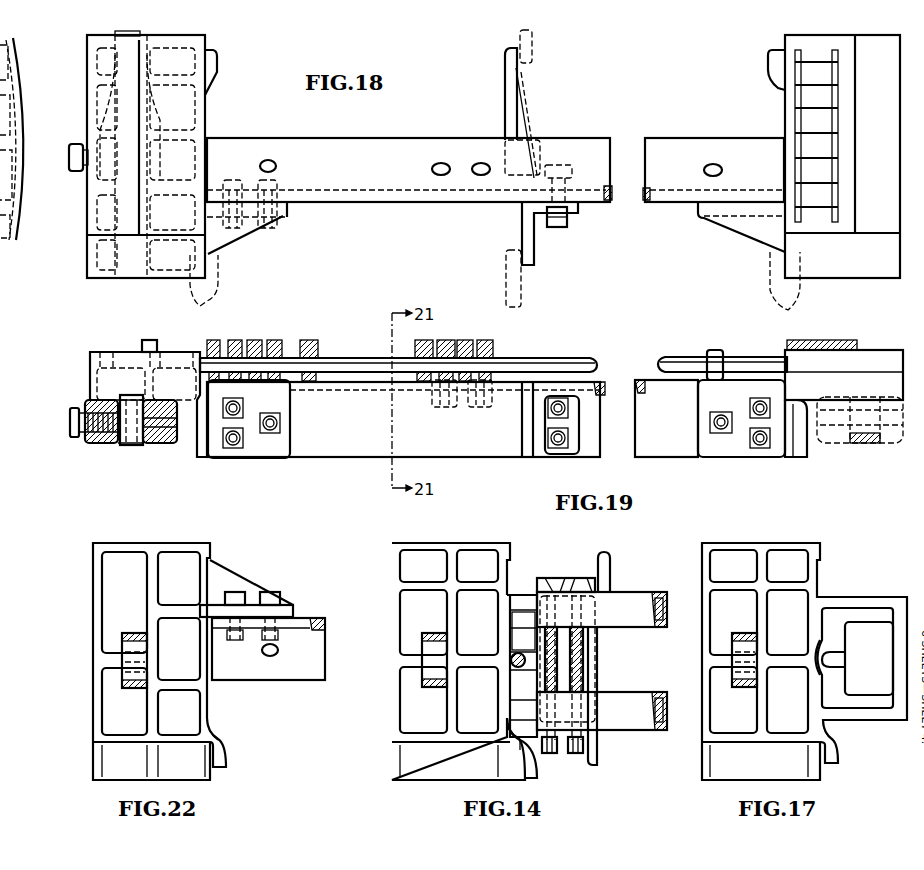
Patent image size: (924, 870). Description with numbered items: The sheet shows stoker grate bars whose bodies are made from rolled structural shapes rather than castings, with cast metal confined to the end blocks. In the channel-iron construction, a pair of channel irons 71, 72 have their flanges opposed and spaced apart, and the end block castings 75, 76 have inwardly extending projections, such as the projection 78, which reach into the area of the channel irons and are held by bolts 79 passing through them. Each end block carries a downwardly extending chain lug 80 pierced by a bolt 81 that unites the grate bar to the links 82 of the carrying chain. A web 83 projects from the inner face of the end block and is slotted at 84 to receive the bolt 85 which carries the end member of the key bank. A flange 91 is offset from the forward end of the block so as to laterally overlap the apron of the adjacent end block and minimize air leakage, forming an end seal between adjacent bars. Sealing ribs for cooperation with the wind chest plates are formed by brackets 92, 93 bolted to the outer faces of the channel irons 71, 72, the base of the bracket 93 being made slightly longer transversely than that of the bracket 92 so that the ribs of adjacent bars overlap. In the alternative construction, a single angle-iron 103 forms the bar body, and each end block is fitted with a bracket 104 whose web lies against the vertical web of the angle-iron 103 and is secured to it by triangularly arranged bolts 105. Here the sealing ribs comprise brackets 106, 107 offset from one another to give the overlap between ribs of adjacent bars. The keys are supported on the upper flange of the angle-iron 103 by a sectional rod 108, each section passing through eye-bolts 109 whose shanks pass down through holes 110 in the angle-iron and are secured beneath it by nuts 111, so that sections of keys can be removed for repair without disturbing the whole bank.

In FIG. 18, the end block casting 75 is at (2, 107).
In FIG. 19, the end block casting 75 is at (149, 398).
In FIG. 22, the end block casting 75 is at (108, 620).
In FIG. 18, the end block casting 76 is at (850, 152).
In FIG. 14, the inwardly extending projection 78 is at (520, 600).
In FIG. 17, the inwardly extending projection 78 is at (870, 598).
In FIG. 14, the bolts 79 is at (573, 660).
In FIG. 19, the chain lug 80 is at (132, 445).
In FIG. 22, the chain lug 80 is at (134, 660).
In FIG. 17, the chain lug 80 is at (744, 660).
In FIG. 18, the bolt 81 is at (72, 163).
In FIG. 19, the bolt 81 is at (72, 436).
In FIG. 19, the links of the carrying chain 82 is at (103, 443).
In FIG. 14, the web 83 is at (523, 631).
In FIG. 17, the web 83 is at (836, 636).
In FIG. 17, the slot 84 is at (838, 661).
In FIG. 14, the bolt 85 is at (519, 668).
In FIG. 14, the channel iron 71 is at (602, 609).
In FIG. 14, the channel iron 72 is at (602, 711).
In FIG. 22, the flange 91 is at (226, 762).
In FIG. 14, the flange 91 is at (520, 768).
In FIG. 17, the flange 91 is at (838, 757).
In FIG. 14, the bracket 92 is at (607, 567).
In FIG. 14, the bracket 93 is at (597, 758).
In FIG. 18, the angle-iron 103 is at (495, 170).
In FIG. 19, the angle-iron 103 is at (462, 447).
In FIG. 22, the angle-iron 103 is at (278, 672).
In FIG. 18, the bracket 104 is at (287, 218).
In FIG. 19, the bracket 104 is at (278, 447).
In FIG. 22, the bracket 104 is at (285, 610).
In FIG. 19, the bolts 105 is at (266, 436).
In FIG. 22, the bolts 105 is at (237, 642).
In FIG. 18, the bracket 106 is at (522, 222).
In FIG. 19, the bracket 106 is at (523, 425).
In FIG. 18, the bracket 107 is at (507, 80).
In FIG. 19, the sectional rod 108 is at (330, 362).
In FIG. 19, the eye-bolts 109 is at (268, 347).
In FIG. 18, the holes 110 is at (265, 160).
In FIG. 22, the holes 110 is at (278, 650).
In FIG. 19, the nuts 111 is at (436, 398).